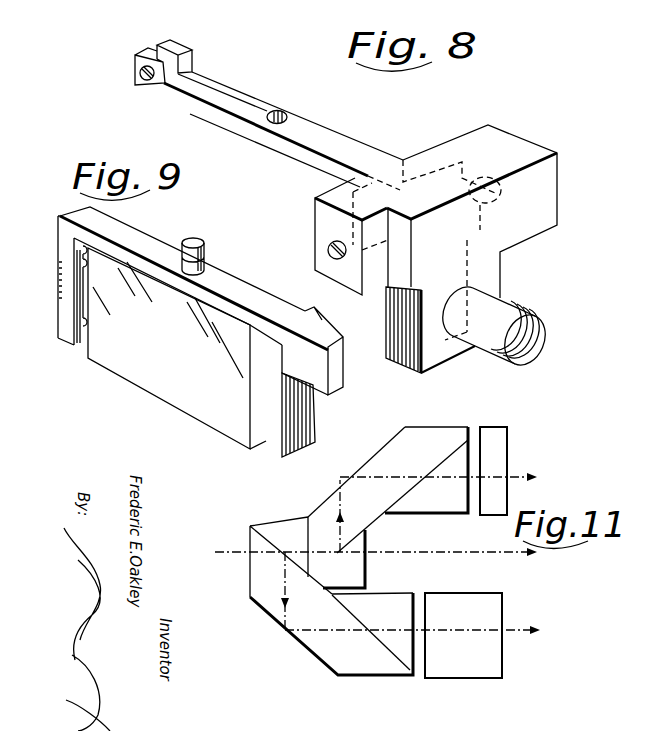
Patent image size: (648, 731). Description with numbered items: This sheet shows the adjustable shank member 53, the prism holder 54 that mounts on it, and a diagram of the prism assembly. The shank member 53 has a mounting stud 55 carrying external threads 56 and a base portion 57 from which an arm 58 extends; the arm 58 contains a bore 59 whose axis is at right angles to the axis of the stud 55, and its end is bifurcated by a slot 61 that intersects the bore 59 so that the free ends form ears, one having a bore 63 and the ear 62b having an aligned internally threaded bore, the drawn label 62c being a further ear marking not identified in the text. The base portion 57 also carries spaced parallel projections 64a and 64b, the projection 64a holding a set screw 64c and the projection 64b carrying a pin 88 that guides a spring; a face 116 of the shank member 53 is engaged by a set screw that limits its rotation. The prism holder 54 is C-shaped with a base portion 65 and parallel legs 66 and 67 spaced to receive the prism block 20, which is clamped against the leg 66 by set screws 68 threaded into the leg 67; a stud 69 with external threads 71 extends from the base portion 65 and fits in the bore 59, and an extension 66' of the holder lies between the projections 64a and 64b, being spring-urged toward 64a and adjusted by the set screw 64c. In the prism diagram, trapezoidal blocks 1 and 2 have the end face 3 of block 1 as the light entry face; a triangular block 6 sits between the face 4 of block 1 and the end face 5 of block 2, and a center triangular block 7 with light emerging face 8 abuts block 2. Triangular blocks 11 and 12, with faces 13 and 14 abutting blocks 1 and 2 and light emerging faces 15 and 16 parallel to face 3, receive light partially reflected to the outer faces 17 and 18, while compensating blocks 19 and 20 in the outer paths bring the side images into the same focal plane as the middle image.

In FIG. 8, the end block 62c is at (140, 51).
In FIG. 8, the ear 62b is at (185, 48).
In FIG. 8, the bore 63 is at (145, 80).
In FIG. 8, the slot 61 is at (233, 100).
In FIG. 8, the bore 59 is at (281, 110).
In FIG. 8, the arm 58 is at (318, 130).
In FIG. 8, the projection 64b is at (452, 143).
In FIG. 8, the shank member 53 is at (515, 127).
In FIG. 8, the base portion 57 is at (560, 178).
In FIG. 8, the projection 64a is at (318, 213).
In FIG. 8, the pin 88 is at (483, 232).
In FIG. 8, the face 116 is at (403, 268).
In FIG. 8, the set screw 64c is at (340, 262).
In FIG. 8, the mounting stud 55 is at (490, 298).
In FIG. 8, the external threads 56 is at (532, 319).
In FIG. 9, the base portion 65 is at (152, 240).
In FIG. 9, the leg 67 is at (62, 340).
In FIG. 9, the set screws 68 is at (88, 247).
In FIG. 9, the block 20 is at (173, 397).
In FIG. 11, the block 20 is at (497, 432).
In FIG. 9, the external threads 71 is at (199, 240).
In FIG. 9, the stud 69 is at (207, 258).
In FIG. 9, the prism holder 54 is at (258, 276).
In FIG. 9, the leg 66 is at (274, 408).
In FIG. 9, the extension 66' is at (348, 385).
In FIG. 11, the prism block 2 is at (390, 445).
In FIG. 11, the face 14 is at (427, 475).
In FIG. 11, the outer face 18 is at (358, 467).
In FIG. 11, the face 4 is at (258, 517).
In FIG. 11, the end face 5 is at (302, 515).
In FIG. 11, the prism block 6 is at (288, 520).
In FIG. 11, the prism block 7 is at (366, 545).
In FIG. 11, the light emerging face 8 is at (366, 569).
In FIG. 11, the prism block 12 is at (448, 507).
In FIG. 11, the light emerging face 16 is at (472, 465).
In FIG. 11, the prism block 1 is at (315, 645).
In FIG. 11, the end face 3 is at (250, 568).
In FIG. 11, the outer face 17 is at (278, 622).
In FIG. 11, the face 13 is at (366, 634).
In FIG. 11, the prism block 11 is at (402, 597).
In FIG. 11, the light emerging face 15 is at (417, 635).
In FIG. 11, the block 19 is at (493, 595).